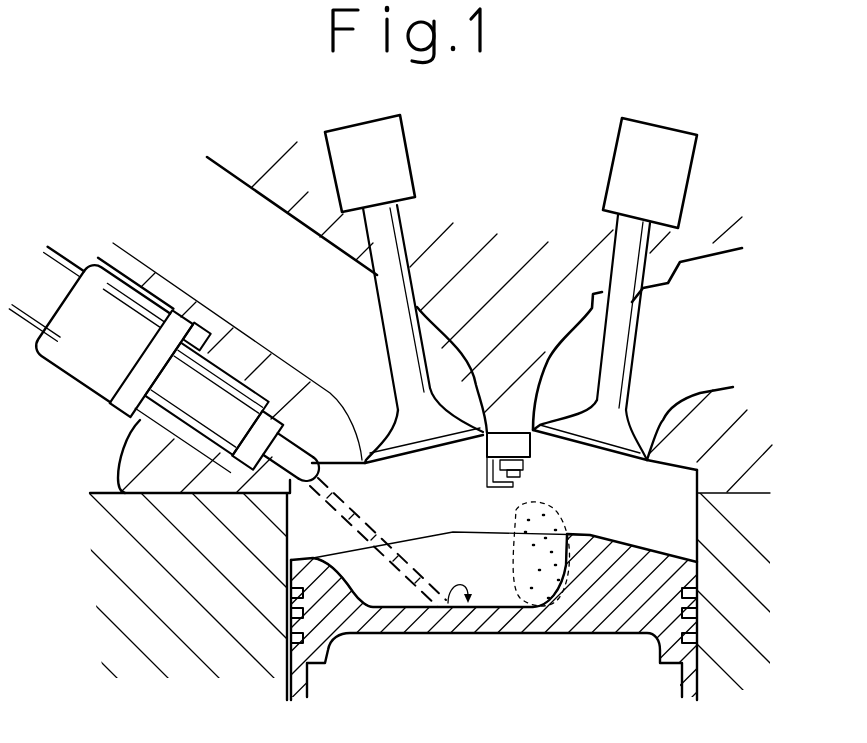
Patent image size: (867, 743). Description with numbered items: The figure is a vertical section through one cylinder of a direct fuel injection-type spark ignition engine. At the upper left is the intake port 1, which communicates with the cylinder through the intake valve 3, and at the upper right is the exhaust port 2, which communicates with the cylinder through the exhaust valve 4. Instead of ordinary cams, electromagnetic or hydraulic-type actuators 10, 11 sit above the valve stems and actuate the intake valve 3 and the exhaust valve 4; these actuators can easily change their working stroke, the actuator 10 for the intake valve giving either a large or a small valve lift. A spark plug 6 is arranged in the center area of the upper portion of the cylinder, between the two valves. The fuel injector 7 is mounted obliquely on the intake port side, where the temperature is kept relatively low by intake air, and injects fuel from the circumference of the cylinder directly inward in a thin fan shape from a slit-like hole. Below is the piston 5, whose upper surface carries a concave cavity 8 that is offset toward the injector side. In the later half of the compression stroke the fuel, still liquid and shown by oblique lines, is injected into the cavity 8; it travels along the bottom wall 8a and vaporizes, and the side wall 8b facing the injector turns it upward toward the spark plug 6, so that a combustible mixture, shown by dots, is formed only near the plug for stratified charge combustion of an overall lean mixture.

The intake port 1 is at (290, 253).
The exhaust port 2 is at (722, 290).
The intake valve 3 is at (400, 290).
The exhaust valve 4 is at (630, 268).
The piston 5 is at (581, 613).
The spark plug 6 is at (523, 447).
The fuel injector 7 is at (93, 373).
The cavity 8 is at (380, 588).
The bottom wall 8a is at (453, 583).
The side wall 8b is at (557, 564).
The actuator 10 is at (397, 168).
The actuator 11 is at (678, 152).